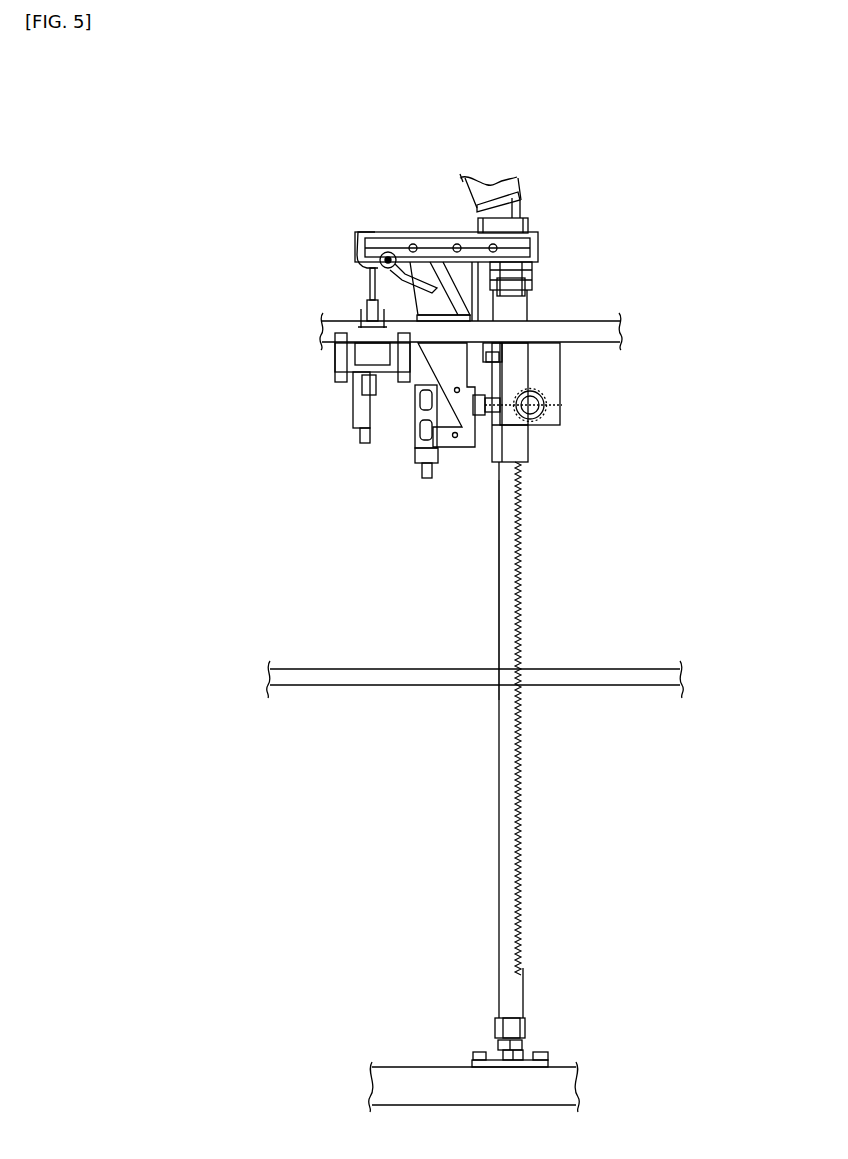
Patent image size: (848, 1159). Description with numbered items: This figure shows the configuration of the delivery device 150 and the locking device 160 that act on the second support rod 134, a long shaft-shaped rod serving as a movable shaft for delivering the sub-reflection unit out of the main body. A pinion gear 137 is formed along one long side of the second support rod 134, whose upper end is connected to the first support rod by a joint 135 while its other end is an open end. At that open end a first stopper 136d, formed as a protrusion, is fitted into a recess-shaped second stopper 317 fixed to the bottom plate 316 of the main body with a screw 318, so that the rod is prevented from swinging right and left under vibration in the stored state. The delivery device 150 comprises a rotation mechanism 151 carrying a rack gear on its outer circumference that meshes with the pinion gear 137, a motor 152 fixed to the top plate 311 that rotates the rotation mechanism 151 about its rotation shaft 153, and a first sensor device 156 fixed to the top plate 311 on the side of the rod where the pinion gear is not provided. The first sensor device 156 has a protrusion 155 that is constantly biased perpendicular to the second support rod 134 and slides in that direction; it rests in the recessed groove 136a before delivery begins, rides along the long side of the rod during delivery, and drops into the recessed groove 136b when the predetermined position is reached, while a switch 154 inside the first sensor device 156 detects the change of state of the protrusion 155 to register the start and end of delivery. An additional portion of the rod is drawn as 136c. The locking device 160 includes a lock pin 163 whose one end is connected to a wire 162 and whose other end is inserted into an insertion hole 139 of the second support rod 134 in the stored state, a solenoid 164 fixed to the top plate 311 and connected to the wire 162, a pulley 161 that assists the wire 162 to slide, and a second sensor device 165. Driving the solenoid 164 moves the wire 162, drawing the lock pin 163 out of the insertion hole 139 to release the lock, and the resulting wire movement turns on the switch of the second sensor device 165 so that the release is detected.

The second support rod 134 is at (498, 786).
The joint 135 is at (538, 240).
The recessed groove 136a is at (487, 407).
The recessed groove 136b is at (503, 963).
The shaft threaded portion 136c is at (499, 608).
The first stopper 136d is at (495, 1025).
The pinion gear 137 is at (520, 815).
The insertion hole 139 is at (507, 247).
The delivery device 150 is at (557, 425).
The rotation mechanism 151 is at (542, 393).
The motor 152 is at (560, 365).
The rotation shaft 153 is at (562, 402).
The switch 154 is at (415, 418).
The protrusion 155 is at (528, 422).
The first sensor device 156 is at (413, 463).
The locking device 160 is at (398, 238).
The pulley 161 is at (370, 263).
The wire 162 is at (373, 283).
The lock pin 163 is at (450, 240).
The solenoid 164 is at (333, 365).
The second sensor device 165 is at (365, 305).
The top plate 311 is at (322, 330).
The bottom plate 316 is at (557, 1083).
The second stopper 317 is at (523, 1025).
The screw 318 is at (548, 1057).